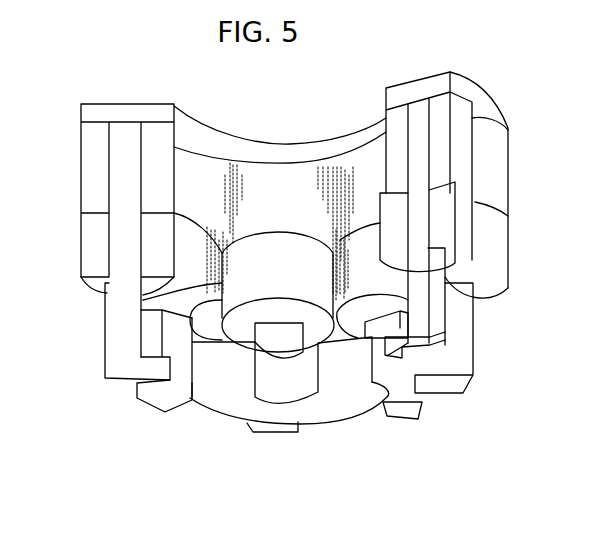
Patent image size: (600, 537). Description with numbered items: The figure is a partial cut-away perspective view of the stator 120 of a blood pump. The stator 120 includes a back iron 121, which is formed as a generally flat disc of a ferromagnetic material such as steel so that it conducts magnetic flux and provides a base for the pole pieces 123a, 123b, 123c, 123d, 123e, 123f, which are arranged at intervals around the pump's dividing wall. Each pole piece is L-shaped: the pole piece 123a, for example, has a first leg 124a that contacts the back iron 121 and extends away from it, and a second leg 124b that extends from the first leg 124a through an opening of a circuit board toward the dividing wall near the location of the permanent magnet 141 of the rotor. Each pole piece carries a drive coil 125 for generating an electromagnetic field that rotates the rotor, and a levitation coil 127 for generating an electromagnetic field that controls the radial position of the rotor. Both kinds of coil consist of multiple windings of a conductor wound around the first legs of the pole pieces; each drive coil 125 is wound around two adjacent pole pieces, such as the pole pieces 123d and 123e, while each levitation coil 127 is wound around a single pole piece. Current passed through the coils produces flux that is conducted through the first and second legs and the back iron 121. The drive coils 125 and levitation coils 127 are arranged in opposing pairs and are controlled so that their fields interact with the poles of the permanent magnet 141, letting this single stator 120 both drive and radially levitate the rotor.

The stator 120 is at (237, 455).
The back iron 121 is at (88, 115).
The pole piece 123a is at (430, 318).
The pole piece 123b is at (432, 383).
The pole piece 123c is at (385, 418).
The pole piece 123d is at (278, 432).
The pole piece 123e is at (167, 412).
The pole piece 123f is at (118, 378).
The first leg 124a is at (420, 158).
The second leg 124b is at (425, 355).
The drive coil 125 is at (202, 152).
The levitation coil 127 is at (88, 253).
The permanent magnet 141 is at (233, 407).